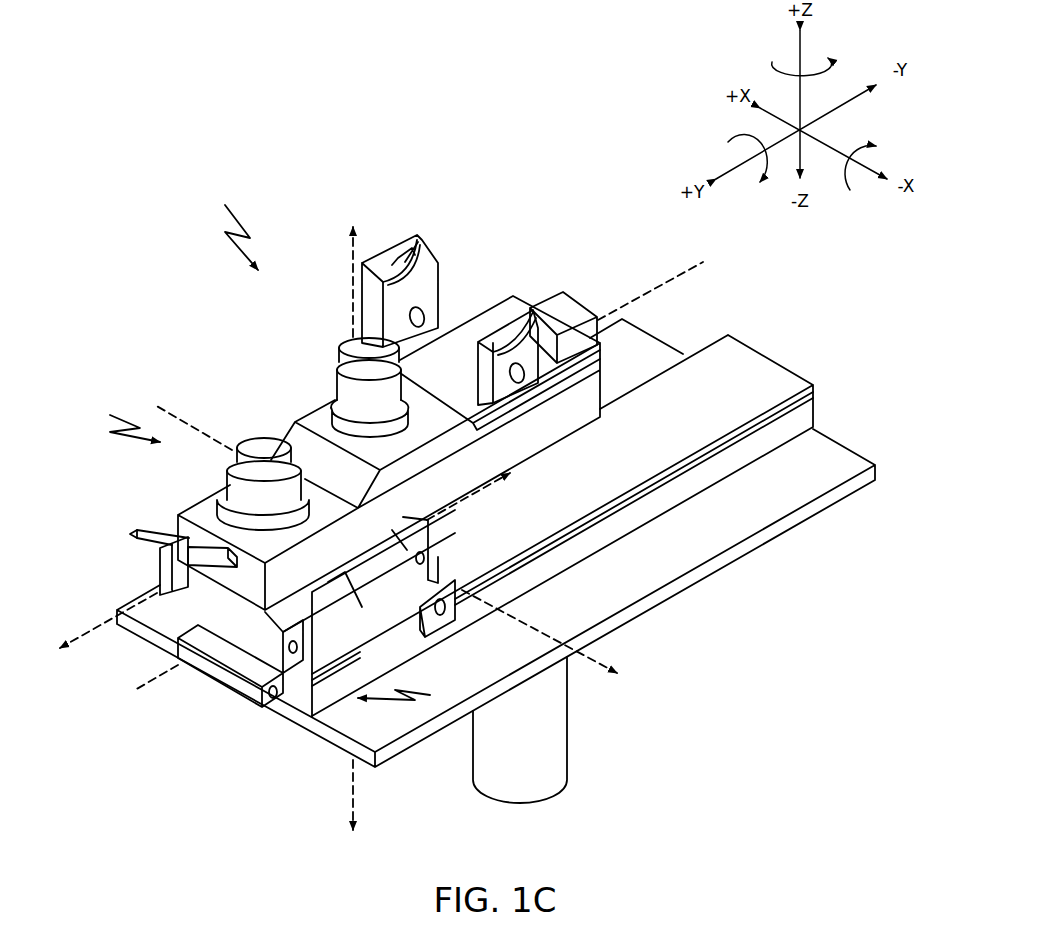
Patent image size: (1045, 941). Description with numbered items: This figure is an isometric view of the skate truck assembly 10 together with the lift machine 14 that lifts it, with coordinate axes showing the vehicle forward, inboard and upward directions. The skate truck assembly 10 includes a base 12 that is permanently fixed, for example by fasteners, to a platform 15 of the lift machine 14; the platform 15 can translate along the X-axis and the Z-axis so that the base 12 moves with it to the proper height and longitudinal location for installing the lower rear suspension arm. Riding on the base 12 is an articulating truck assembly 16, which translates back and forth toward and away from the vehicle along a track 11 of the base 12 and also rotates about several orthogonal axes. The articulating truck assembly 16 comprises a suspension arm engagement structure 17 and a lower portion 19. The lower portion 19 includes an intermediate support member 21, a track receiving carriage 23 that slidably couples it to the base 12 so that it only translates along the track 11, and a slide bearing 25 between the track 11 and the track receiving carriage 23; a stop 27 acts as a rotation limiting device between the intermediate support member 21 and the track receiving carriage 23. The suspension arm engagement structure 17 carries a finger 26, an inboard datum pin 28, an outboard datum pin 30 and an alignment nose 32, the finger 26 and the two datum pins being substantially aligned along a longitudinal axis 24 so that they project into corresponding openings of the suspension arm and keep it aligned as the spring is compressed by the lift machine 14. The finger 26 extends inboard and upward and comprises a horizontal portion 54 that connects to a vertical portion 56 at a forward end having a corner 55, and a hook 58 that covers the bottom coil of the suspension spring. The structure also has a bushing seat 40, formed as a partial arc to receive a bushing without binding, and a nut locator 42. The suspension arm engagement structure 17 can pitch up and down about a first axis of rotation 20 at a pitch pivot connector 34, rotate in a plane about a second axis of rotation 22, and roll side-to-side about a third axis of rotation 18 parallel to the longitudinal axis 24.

The skate truck assembly 10 is at (155, 378).
The track 11 is at (690, 460).
The base 12 is at (735, 345).
The lift machine 14 is at (807, 640).
The platform 15 is at (760, 525).
The articulating truck assembly 16 is at (115, 424).
The suspension arm engagement structure 17 is at (229, 225).
The third axis of rotation 18 is at (160, 677).
The lower portion 19 is at (408, 695).
The first axis of rotation 20 is at (182, 418).
The intermediate support member 21 is at (390, 597).
The second axis of rotation 22 is at (345, 247).
The track receiving carriage 23 is at (348, 662).
The longitudinal axis 24 is at (672, 275).
The slide bearing 25 is at (450, 607).
The finger 26 is at (137, 533).
The stop 27 is at (343, 640).
The inboard datum pin 28 is at (255, 442).
The outboard datum pin 30 is at (360, 347).
The alignment nose 32 is at (575, 300).
The pitch pivot connector 34 is at (428, 553).
The bushing seat 40 is at (440, 298).
The nut locator 42 is at (428, 244).
The horizontal portion 54 is at (195, 578).
The corner 55 is at (178, 648).
The vertical portion 56 is at (162, 570).
The hook 58 is at (160, 535).